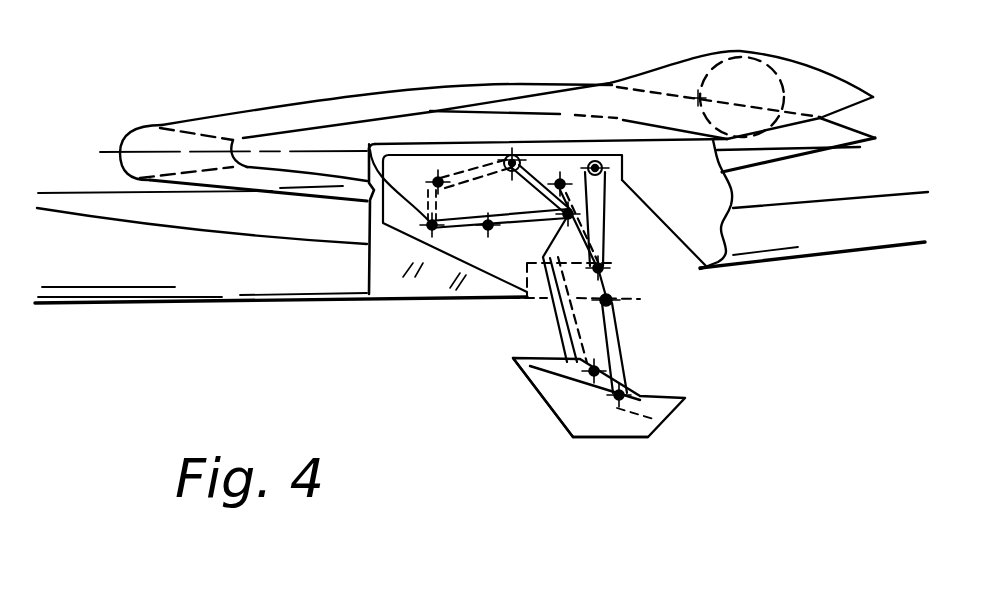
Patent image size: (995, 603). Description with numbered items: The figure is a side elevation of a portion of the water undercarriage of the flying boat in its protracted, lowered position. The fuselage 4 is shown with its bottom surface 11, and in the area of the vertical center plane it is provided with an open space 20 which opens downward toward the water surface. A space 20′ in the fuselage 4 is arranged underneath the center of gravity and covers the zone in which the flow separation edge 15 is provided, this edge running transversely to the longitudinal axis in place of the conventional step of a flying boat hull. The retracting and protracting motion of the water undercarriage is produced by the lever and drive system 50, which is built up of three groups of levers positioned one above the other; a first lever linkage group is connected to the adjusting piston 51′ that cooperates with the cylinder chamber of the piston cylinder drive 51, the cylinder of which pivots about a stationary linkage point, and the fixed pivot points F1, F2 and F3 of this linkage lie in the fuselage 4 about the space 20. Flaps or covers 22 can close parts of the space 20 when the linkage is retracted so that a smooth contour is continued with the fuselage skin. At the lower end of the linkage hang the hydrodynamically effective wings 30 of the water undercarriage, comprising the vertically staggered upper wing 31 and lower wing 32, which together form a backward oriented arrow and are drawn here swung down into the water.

The bottom surface 11 is at (257, 141).
The fuselage 4 is at (155, 287).
The fixed pivot point F1 is at (368, 146).
The fixed pivot point F2 is at (510, 152).
The fixed pivot point F3 is at (597, 160).
The piston cylinder drive 51 is at (457, 167).
The adjusting piston 51′ is at (463, 106).
The open space 20 is at (664, 257).
The space 20′ is at (393, 220).
The lever and drive system 50 is at (430, 327).
The flaps or covers 22 is at (567, 278).
The flow separation edge 15 is at (627, 291).
The hydrodynamically effective wings 30 is at (565, 457).
The upper wing 31 is at (555, 372).
The lower wing 32 is at (613, 430).